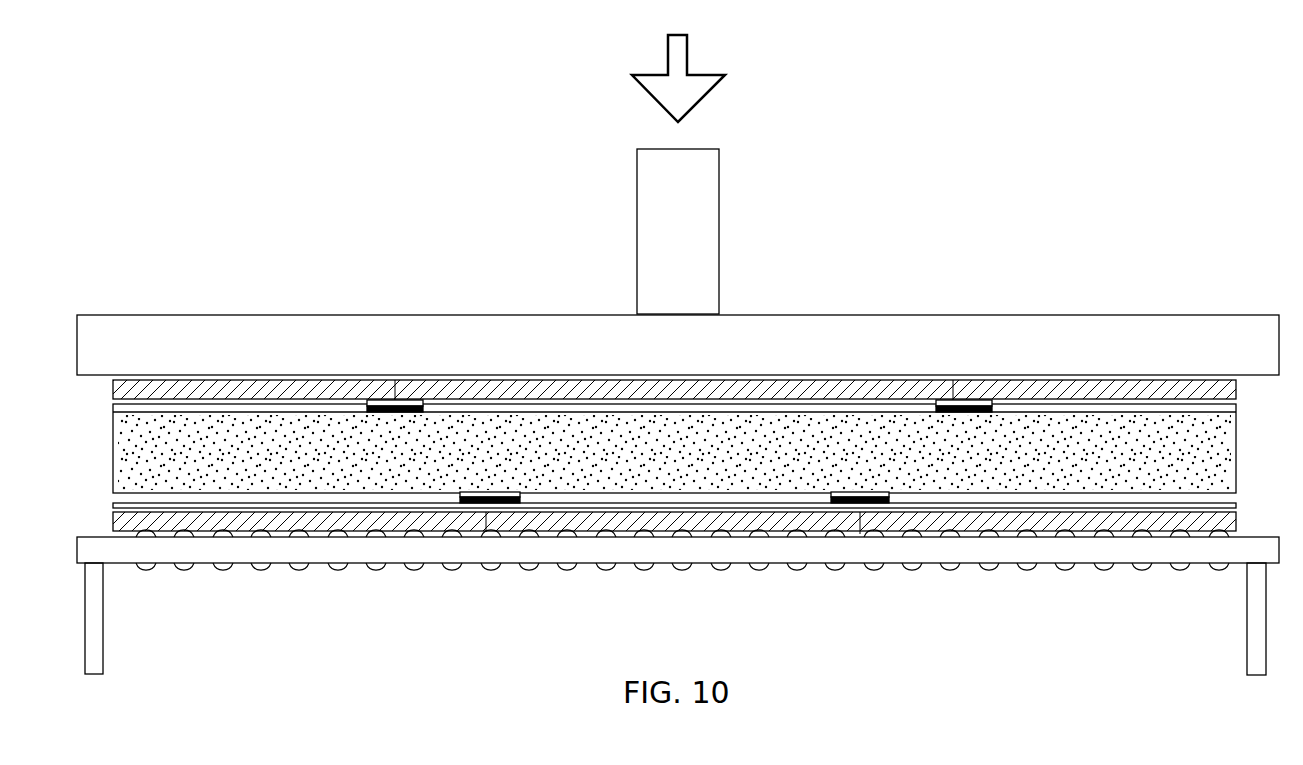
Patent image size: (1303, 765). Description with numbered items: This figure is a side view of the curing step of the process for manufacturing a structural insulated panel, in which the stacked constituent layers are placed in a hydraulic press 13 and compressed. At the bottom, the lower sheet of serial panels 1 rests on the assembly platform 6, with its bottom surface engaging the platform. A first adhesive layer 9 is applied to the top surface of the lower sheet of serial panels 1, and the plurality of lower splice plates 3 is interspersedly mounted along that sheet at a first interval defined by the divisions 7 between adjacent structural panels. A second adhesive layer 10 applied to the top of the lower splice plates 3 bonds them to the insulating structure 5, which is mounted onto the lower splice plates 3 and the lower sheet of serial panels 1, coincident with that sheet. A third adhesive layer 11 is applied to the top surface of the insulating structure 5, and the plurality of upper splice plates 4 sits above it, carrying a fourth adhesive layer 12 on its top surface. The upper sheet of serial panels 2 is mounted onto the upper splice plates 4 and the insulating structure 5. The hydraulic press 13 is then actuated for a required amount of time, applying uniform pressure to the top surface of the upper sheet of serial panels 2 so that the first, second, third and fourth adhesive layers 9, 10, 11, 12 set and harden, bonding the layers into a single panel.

The lower sheet of serial panels 1 is at (1233, 525).
The upper sheet of serial panels 2 is at (641, 385).
The plurality of lower splice plates 3 is at (462, 500).
The plurality of upper splice plates 4 is at (367, 408).
The insulating structure 5 is at (664, 467).
The assembly platform 6 is at (700, 560).
The divisions 7 is at (395, 380).
The first adhesive layer 9 is at (113, 506).
The second adhesive layer 10 is at (516, 496).
The third adhesive layer 11 is at (1226, 406).
The fourth adhesive layer 12 is at (426, 405).
The hydraulic press 13 is at (716, 208).